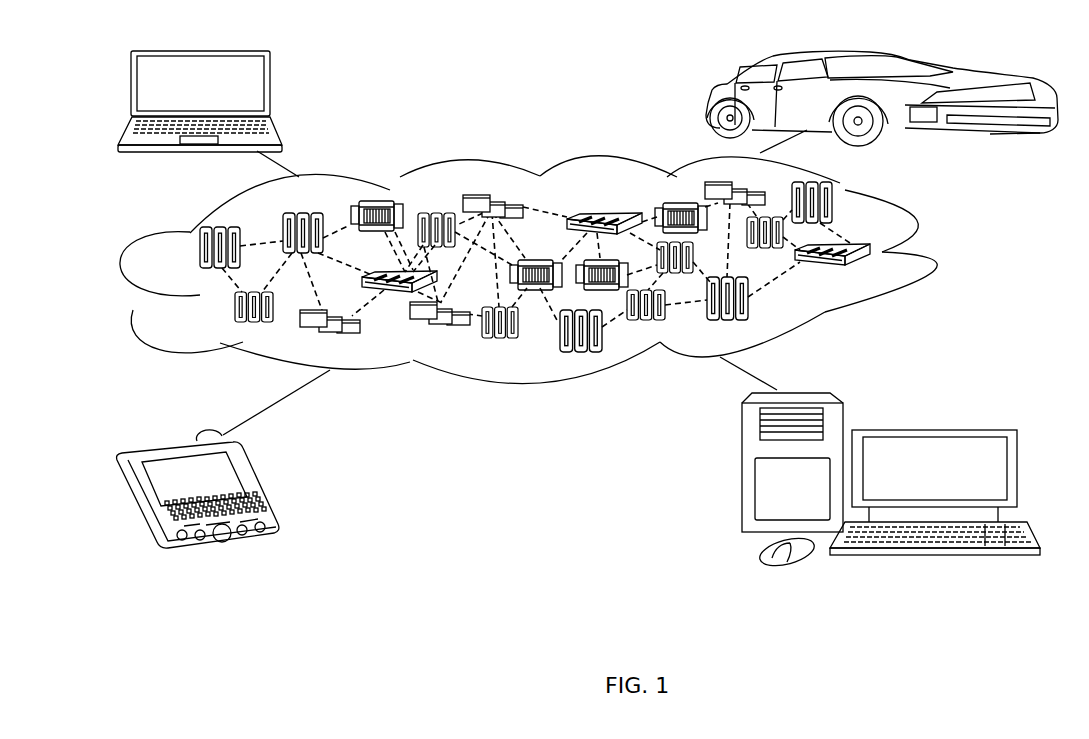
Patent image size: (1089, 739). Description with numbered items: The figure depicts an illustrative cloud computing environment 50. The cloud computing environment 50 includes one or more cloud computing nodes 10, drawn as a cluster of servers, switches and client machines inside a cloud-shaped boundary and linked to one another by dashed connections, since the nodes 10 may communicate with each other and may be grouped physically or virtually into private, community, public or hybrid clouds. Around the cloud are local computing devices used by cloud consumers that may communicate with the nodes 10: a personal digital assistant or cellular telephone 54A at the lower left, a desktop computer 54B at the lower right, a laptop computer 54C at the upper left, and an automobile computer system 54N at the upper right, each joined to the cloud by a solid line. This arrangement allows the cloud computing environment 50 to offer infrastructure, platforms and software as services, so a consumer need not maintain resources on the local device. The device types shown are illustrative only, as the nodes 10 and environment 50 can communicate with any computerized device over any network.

The cloud computing node 10 is at (875, 275).
The cloud computing environment 50 is at (933, 253).
The personal digital assistant or cellular telephone 54A is at (260, 487).
The desktop computer 54B is at (942, 418).
The laptop computer 54C is at (270, 89).
The automobile computer system 54N is at (710, 99).